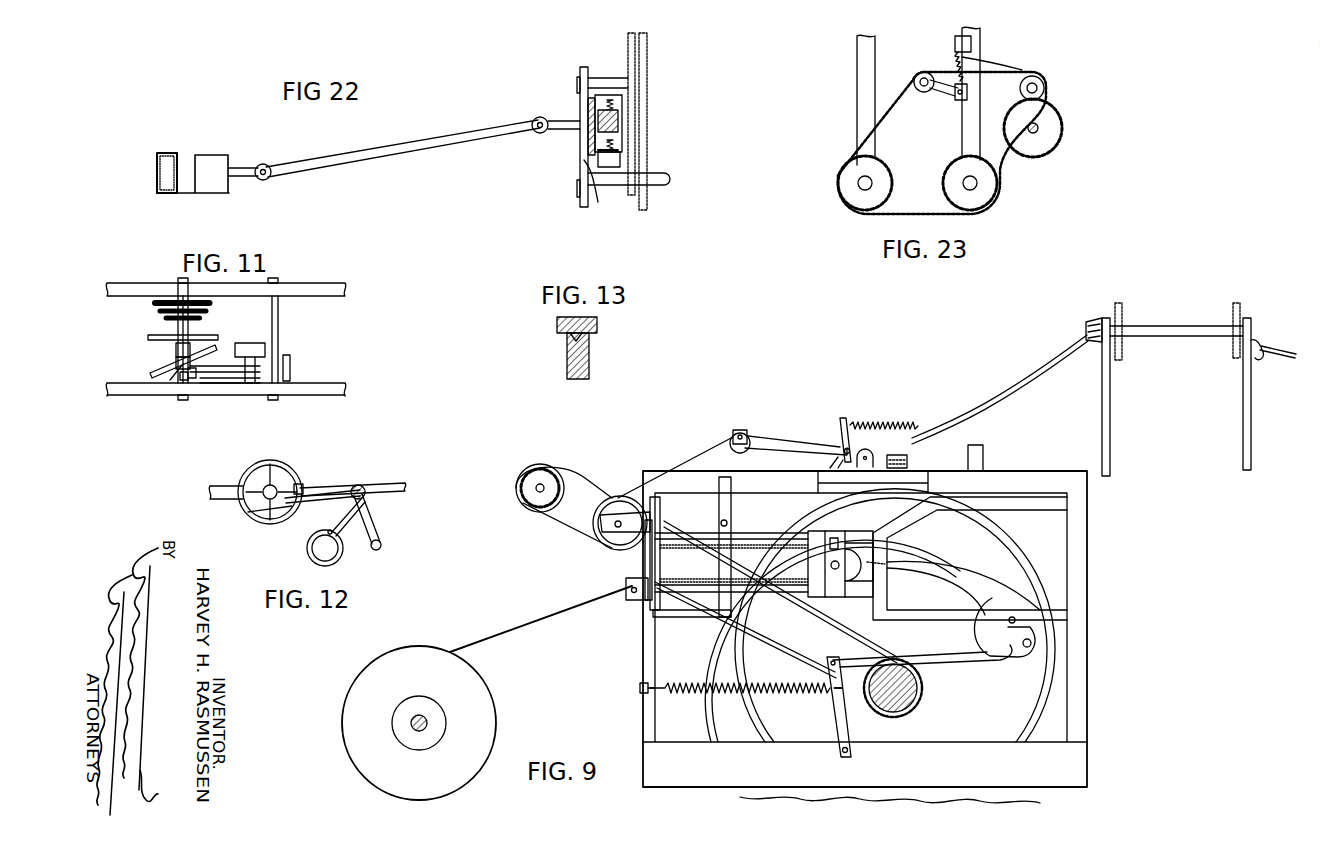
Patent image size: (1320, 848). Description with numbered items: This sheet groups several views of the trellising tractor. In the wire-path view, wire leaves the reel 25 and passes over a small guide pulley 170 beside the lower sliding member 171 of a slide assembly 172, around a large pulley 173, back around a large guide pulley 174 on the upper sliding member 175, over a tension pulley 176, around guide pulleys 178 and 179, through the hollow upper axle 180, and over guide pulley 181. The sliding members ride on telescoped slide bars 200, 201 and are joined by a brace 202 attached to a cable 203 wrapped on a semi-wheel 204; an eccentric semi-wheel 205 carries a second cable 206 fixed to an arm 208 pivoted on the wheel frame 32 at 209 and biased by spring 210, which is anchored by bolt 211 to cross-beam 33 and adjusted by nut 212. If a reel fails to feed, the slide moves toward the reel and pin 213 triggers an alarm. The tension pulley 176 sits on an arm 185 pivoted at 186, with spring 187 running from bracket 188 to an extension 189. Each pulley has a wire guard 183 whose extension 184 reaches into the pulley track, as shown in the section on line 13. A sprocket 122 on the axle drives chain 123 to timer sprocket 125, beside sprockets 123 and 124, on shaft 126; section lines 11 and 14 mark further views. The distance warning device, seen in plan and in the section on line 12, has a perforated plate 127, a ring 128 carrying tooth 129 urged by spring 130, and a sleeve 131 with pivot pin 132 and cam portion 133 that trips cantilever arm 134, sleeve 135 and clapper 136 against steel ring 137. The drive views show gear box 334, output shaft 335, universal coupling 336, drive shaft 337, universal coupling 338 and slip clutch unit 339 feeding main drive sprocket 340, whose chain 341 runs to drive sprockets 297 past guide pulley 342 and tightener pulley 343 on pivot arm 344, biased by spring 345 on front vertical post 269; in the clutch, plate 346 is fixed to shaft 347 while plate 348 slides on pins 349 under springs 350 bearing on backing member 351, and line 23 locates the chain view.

In FIG. 22, the cross-beam 33 is at (158, 172).
In FIG. 22, the around the corner gear box 334 is at (214, 166).
In FIG. 22, the output shaft 335 is at (268, 150).
In FIG. 22, the universal coupling 336 is at (269, 178).
In FIG. 22, the drive shaft 337 is at (340, 154).
In FIG. 22, the universal coupling 338 is at (536, 120).
In FIG. 22, the shaft 347 is at (563, 114).
In FIG. 22, the section line 23— 23 is at (578, 218).
In FIG. 22, the pins 349 is at (588, 88).
In FIG. 22, the slip clutch unit 339 is at (606, 72).
In FIG. 22, the clutch plate 346 is at (588, 138).
In FIG. 22, the springs 350 is at (627, 98).
In FIG. 22, the backing member 351 is at (619, 110).
In FIG. 22, the clutch plate 348 is at (619, 154).
In FIG. 22, the main drive sprocket 340 is at (596, 148).
In FIG. 23, the main drive sprocket 340 is at (1051, 127).
In FIG. 22, the chain 341 is at (588, 164).
In FIG. 23, the chain 341 is at (863, 138).
In FIG. 23, the front vertical post 269 is at (969, 140).
In FIG. 23, the drive sprocket 297 is at (850, 202).
In FIG. 23, the rotatable mounted pulley 343 is at (922, 74).
In FIG. 23, the guide pulley 342 is at (1041, 91).
In FIG. 23, the spring 345 is at (959, 53).
In FIG. 23, the pivot arm 344 is at (958, 108).
In FIG. 11, the timer sprocket 125 is at (152, 303).
In FIG. 9, the timer sprocket 125 is at (544, 510).
In FIG. 11, the timer sprocket 124 is at (156, 311).
In FIG. 9, the timer sprocket 124 is at (526, 500).
In FIG. 11, the chain 123 is at (164, 318).
In FIG. 9, the chain 123 is at (522, 490).
In FIG. 11, the shaft 126 is at (146, 336).
In FIG. 12, the shaft 126 is at (244, 476).
In FIG. 9, the shaft 126 is at (516, 474).
In FIG. 11, the spring 130 is at (192, 342).
In FIG. 11, the circumferentially perforated plate 127 is at (194, 346).
In FIG. 12, the circumferentially perforated plate 127 is at (244, 464).
In FIG. 11, the tooth 129 is at (206, 366).
In FIG. 12, the tooth 129 is at (326, 486).
In FIG. 11, the ring 128 is at (172, 366).
In FIG. 12, the ring 128 is at (240, 503).
In FIG. 11, the sleeve 135 is at (278, 354).
In FIG. 12, the sleeve 135 is at (364, 488).
In FIG. 11, the clapper 136 is at (290, 356).
In FIG. 12, the clapper 136 is at (372, 516).
In FIG. 11, the sleeve 131 is at (170, 380).
In FIG. 12, the sleeve 131 is at (276, 480).
In FIG. 11, the pivot pin 132 is at (182, 380).
In FIG. 12, the pivot pin 132 is at (280, 460).
In FIG. 11, the cam portion 133 is at (196, 378).
In FIG. 12, the cam portion 133 is at (302, 482).
In FIG. 11, the cantilever arm 134 is at (242, 382).
In FIG. 12, the cantilever arm 134 is at (310, 502).
In FIG. 11, the section line 12— 12 is at (303, 370).
In FIG. 12, the steel ring 137 is at (308, 550).
In FIG. 13, the wire guard member 183 is at (594, 322).
In FIG. 9, the wire guard member 183 is at (588, 540).
In FIG. 13, the extension 184 is at (589, 358).
In FIG. 9, the frame 32 is at (1023, 480).
In FIG. 9, the large guide pulley 174 is at (604, 537).
In FIG. 9, the small guide pulley 170 is at (636, 602).
In FIG. 9, the section line 11— 11 is at (623, 449).
In FIG. 9, the section line 13— 13 is at (598, 513).
In FIG. 9, the section line 14- 14 is at (753, 525).
In FIG. 9, the slide bar 201 is at (755, 536).
In FIG. 9, the slide bar 200 is at (733, 606).
In FIG. 9, the lower sliding member 171 is at (789, 594).
In FIG. 9, the upper sliding member 175 is at (837, 534).
In FIG. 9, the pin 213 is at (836, 533).
In FIG. 9, the large pulley 173 is at (843, 568).
In FIG. 9, the slide assembly 172 is at (908, 551).
In FIG. 9, the brace 202 is at (893, 528).
In FIG. 9, the cable 203 is at (966, 573).
In FIG. 9, the semi-wheel 204 is at (1029, 596).
In FIG. 9, the eccentric semi-wheel 205 is at (1019, 630).
In FIG. 9, the cable 206 is at (929, 658).
In FIG. 9, the sprocket 122 is at (872, 696).
In FIG. 9, the pivot 209 is at (855, 756).
In FIG. 9, the arm 208 is at (832, 716).
In FIG. 9, the spring 210 is at (723, 690).
In FIG. 9, the bolt 211 is at (638, 688).
In FIG. 9, the nut 212 is at (642, 694).
In FIG. 9, the tension pulley 176 is at (739, 432).
In FIG. 9, the arm 185 is at (806, 446).
In FIG. 9, the pivot connection 186 is at (844, 436).
In FIG. 9, the extension 189 is at (851, 426).
In FIG. 9, the spring 187 is at (887, 440).
In FIG. 9, the guide pulley 178 is at (911, 464).
In FIG. 9, the bracket 188 is at (983, 460).
In FIG. 9, the hollow upper axle 180 is at (1167, 308).
In FIG. 9, the guide pulley 179 is at (1085, 332).
In FIG. 9, the guide pulley 181 is at (1265, 346).
In FIG. 9, the drum 25 is at (364, 678).